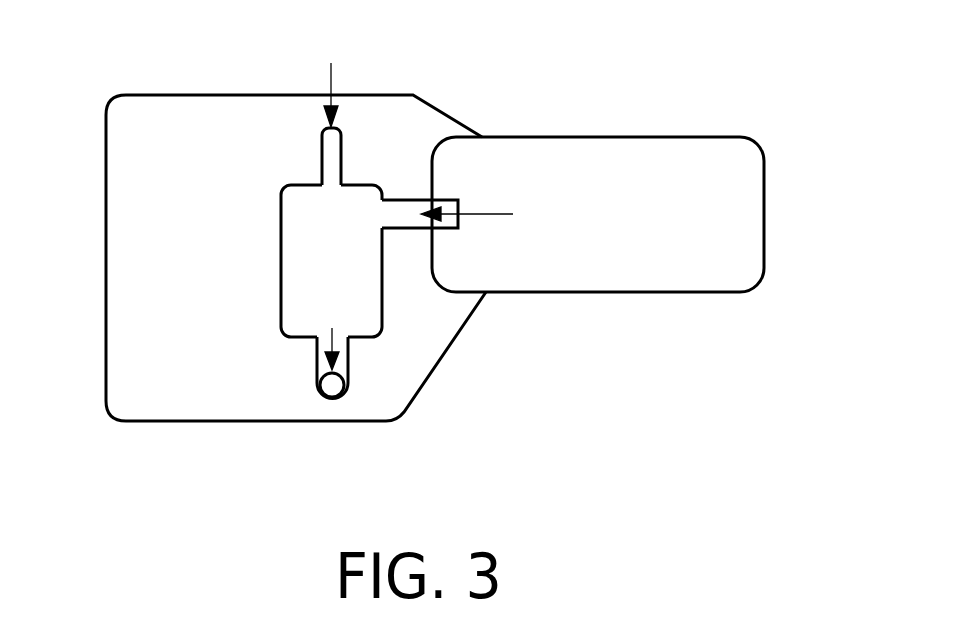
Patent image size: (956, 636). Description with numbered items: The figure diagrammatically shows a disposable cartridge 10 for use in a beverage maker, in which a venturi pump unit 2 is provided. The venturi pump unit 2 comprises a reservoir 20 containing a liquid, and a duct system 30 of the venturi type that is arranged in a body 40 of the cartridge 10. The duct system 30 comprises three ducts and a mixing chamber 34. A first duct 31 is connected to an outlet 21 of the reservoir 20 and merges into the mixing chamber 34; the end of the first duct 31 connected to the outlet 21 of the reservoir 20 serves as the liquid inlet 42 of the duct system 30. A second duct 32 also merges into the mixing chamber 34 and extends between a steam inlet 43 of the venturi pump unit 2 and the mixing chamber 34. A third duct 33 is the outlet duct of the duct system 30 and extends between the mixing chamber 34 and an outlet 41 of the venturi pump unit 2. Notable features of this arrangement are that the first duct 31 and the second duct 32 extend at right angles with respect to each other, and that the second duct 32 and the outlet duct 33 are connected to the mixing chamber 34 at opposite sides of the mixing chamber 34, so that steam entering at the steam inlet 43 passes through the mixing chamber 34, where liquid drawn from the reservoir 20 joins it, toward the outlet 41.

The venturi pump unit 2 is at (437, 244).
The disposable cartridge 10 is at (258, 217).
The reservoir 20 is at (764, 213).
The outlet of the reservoir 21 is at (499, 236).
The duct system 30 is at (333, 216).
The first duct 31 is at (410, 207).
The second duct 32 is at (328, 157).
The third duct 33 is at (318, 365).
The mixing chamber 34 is at (288, 260).
The body 40 is at (106, 260).
The outlet of the venturi pump unit 41 is at (332, 388).
The liquid inlet 42 is at (458, 214).
The steam inlet 43 is at (324, 130).